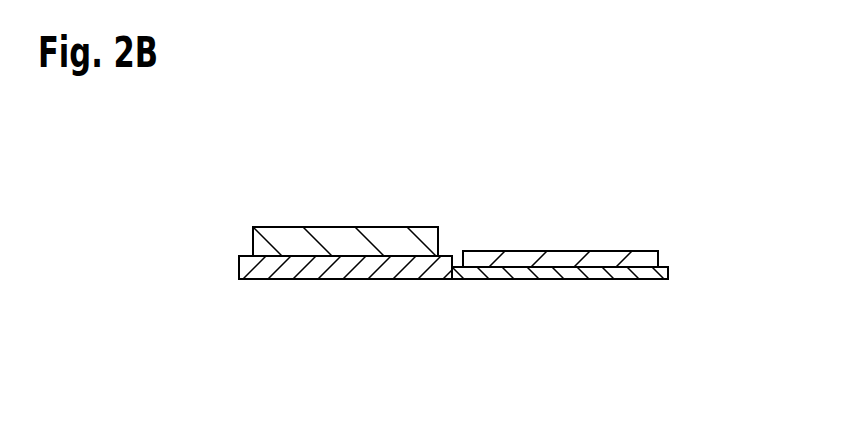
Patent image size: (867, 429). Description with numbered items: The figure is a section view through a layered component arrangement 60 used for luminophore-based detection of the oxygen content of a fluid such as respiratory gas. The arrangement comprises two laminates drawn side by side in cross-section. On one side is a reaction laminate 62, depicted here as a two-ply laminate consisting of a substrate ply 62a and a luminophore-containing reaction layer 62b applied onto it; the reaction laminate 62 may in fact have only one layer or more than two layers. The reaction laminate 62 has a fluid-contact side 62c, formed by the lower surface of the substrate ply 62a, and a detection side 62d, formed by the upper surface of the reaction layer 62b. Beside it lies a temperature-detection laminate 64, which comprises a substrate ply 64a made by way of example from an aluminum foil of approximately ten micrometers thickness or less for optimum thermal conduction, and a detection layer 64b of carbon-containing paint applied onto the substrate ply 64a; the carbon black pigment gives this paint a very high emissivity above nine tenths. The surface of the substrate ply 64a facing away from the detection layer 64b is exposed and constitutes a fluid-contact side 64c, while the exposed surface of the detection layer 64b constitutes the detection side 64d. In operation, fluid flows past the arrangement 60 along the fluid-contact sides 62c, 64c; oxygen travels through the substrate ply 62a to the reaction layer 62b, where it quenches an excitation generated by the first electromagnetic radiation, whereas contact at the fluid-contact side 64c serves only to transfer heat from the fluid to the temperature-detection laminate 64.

The layered component arrangement 60 is at (459, 120).
The reaction laminate 62 is at (315, 343).
The substrate ply 62a is at (281, 272).
The luminophore-containing reaction layer 62b is at (294, 243).
The fluid-contact side 62c is at (403, 280).
The detection side 62d is at (380, 228).
The temperature-detection laminate 64 is at (570, 340).
The substrate ply 64a is at (623, 273).
The detection layer 64b is at (605, 260).
The fluid-contact side 64c is at (523, 280).
The detection side 64d is at (532, 251).